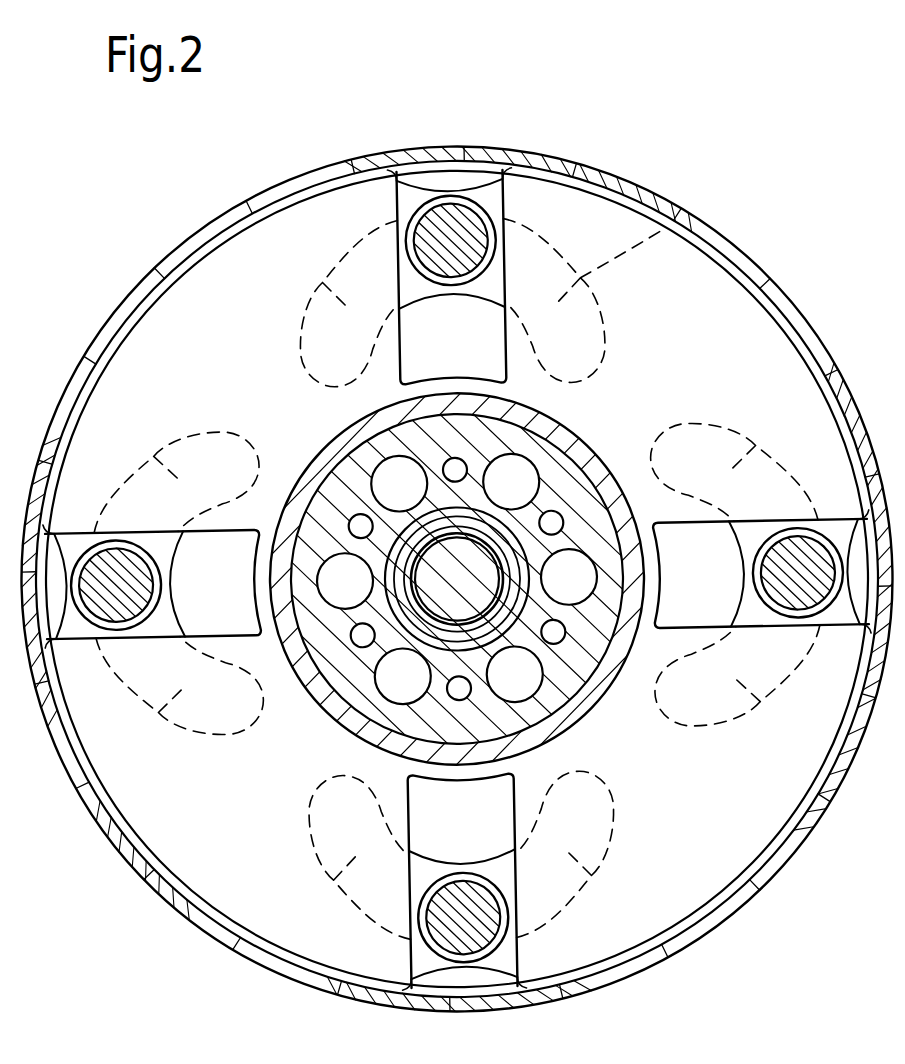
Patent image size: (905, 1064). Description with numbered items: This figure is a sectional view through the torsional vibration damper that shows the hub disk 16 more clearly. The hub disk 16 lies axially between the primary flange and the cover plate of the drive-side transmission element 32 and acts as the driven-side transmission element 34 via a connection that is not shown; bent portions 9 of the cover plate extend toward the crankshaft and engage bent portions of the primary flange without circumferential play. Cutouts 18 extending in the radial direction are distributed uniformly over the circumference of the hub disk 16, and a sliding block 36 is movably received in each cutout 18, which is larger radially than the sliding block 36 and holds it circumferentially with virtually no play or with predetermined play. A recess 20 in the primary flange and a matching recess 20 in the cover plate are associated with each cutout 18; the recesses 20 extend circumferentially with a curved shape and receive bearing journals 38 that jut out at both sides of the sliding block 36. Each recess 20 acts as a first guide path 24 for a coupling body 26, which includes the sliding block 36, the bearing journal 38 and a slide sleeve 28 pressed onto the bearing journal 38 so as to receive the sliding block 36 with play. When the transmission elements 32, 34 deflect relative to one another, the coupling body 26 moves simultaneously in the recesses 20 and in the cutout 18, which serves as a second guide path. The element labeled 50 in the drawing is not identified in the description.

The bent portions 9 is at (62, 398).
The hub disk 16 is at (215, 290).
The cutouts 18 is at (487, 327).
The recess 20 is at (692, 214).
The first guide path 24 is at (541, 230).
The coupling body 26 is at (430, 245).
The slide sleeve 28 is at (420, 252).
The drive-side transmission element 32 is at (358, 152).
The driven-side transmission element 34 is at (178, 350).
The sliding block 36 is at (448, 278).
The bearing journals 38 is at (437, 297).
The slot fillet 50 is at (440, 183).